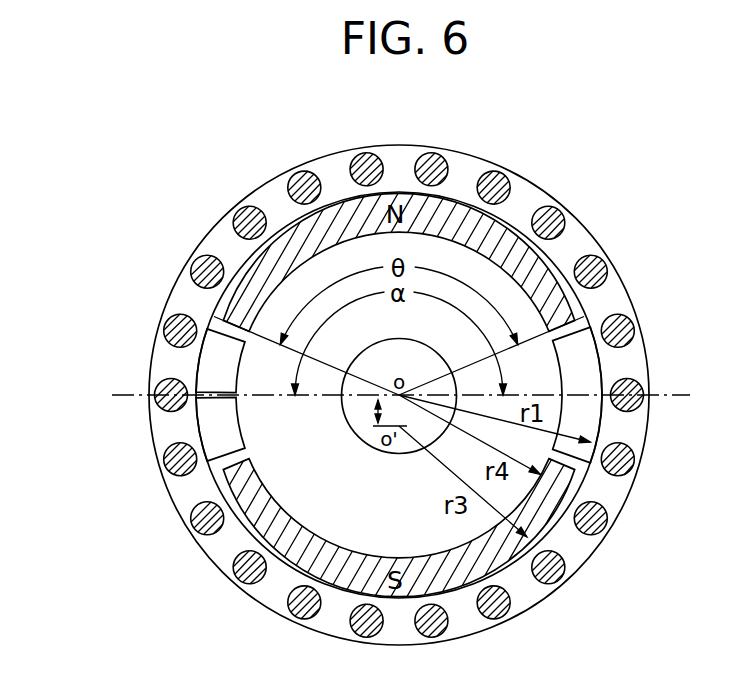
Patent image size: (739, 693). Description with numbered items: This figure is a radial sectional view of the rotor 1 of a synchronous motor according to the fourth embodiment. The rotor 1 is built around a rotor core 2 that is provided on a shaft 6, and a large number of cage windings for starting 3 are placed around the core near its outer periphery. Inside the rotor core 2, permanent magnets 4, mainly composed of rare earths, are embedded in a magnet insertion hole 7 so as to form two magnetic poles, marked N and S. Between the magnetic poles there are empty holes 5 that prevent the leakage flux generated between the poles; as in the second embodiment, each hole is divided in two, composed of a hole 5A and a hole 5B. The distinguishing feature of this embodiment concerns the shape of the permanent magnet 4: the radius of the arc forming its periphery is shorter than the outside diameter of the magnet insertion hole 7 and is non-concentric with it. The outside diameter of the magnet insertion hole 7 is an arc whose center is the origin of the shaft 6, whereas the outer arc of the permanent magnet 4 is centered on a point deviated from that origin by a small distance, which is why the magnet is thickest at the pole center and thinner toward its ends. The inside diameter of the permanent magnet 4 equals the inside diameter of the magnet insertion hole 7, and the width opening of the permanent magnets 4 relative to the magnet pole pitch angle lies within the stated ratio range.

The rotor 1 is at (543, 188).
The rotor core 2 is at (577, 247).
The cage windings for starting 3 is at (617, 316).
The permanent magnet 4 is at (538, 527).
The empty holes 5 is at (137, 395).
The hole 5A is at (210, 372).
The hole 5B is at (210, 437).
The shaft 6 is at (399, 396).
The magnet insertion hole 7 is at (250, 558).